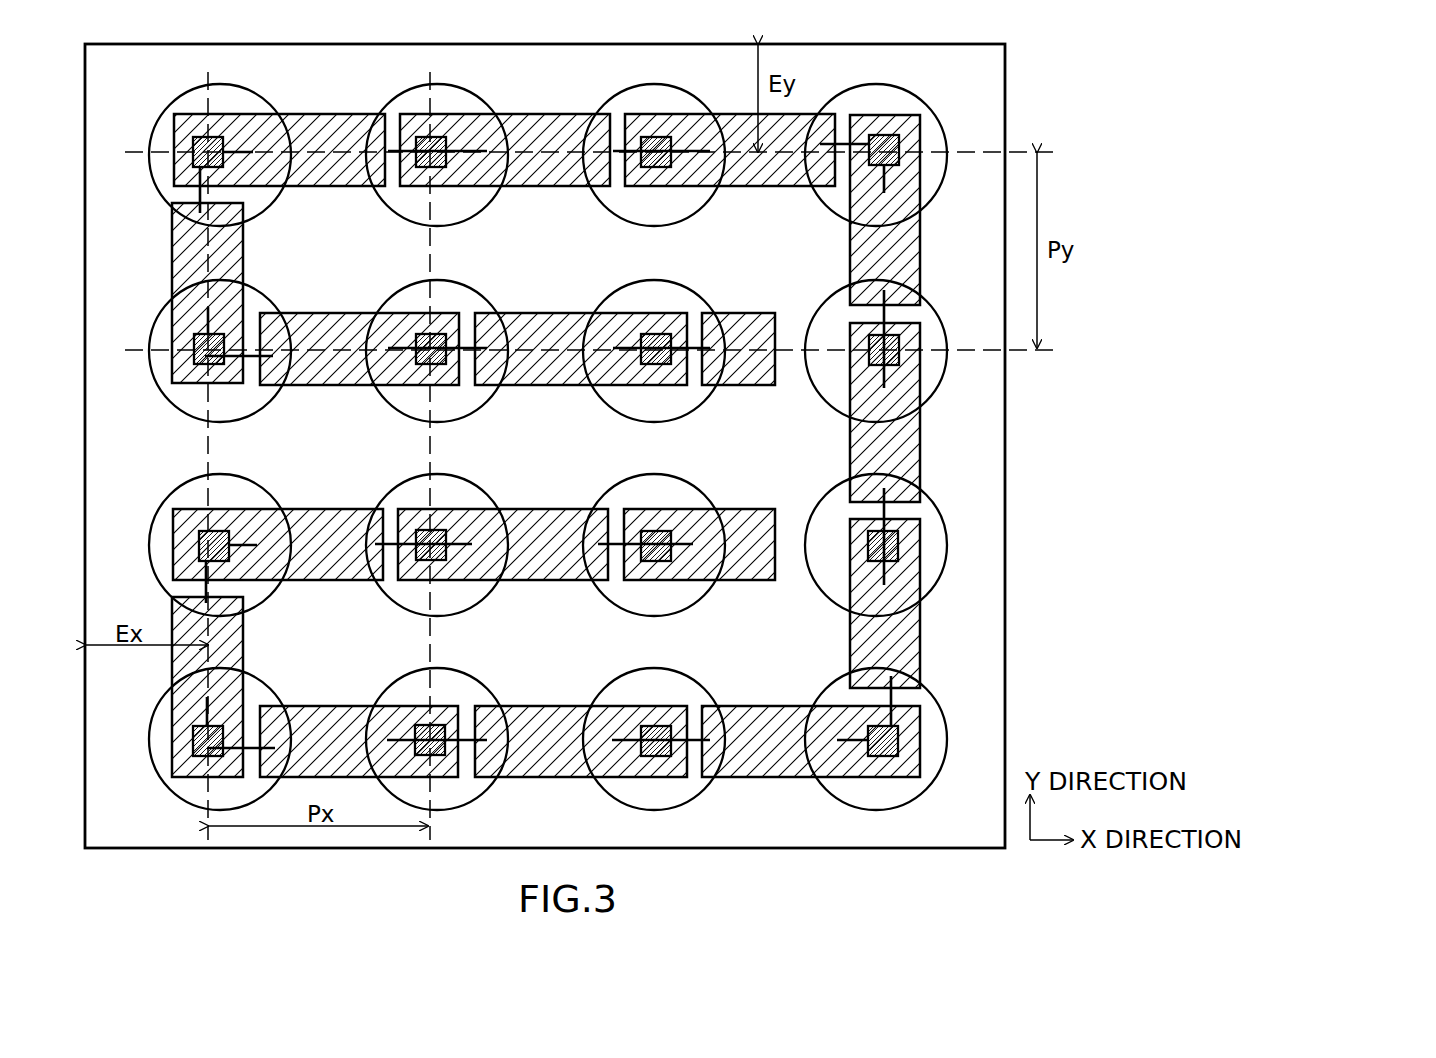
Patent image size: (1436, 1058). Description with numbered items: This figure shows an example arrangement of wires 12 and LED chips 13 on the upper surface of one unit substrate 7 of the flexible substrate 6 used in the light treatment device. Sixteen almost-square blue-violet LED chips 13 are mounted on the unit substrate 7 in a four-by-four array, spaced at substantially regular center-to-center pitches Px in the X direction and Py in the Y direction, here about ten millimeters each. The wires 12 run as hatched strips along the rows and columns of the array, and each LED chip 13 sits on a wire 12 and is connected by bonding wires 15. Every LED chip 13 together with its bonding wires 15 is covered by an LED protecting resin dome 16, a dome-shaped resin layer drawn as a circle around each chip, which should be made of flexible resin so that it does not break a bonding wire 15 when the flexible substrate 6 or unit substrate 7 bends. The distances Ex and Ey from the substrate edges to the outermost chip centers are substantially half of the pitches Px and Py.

The unit substrate 7 is at (1022, 68).
The flexible substrate 6 is at (699, 439).
The LED protecting resin dome 16 is at (940, 510).
The LED chip 13 is at (922, 543).
The bonding wire 15 is at (893, 570).
The wire 12 is at (907, 637).